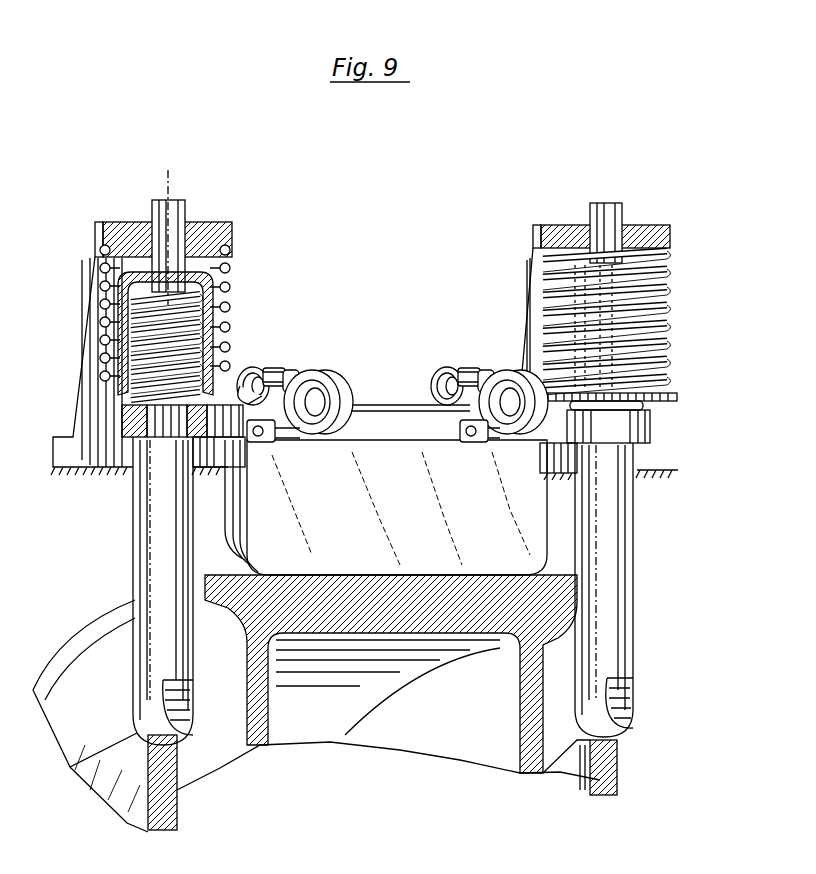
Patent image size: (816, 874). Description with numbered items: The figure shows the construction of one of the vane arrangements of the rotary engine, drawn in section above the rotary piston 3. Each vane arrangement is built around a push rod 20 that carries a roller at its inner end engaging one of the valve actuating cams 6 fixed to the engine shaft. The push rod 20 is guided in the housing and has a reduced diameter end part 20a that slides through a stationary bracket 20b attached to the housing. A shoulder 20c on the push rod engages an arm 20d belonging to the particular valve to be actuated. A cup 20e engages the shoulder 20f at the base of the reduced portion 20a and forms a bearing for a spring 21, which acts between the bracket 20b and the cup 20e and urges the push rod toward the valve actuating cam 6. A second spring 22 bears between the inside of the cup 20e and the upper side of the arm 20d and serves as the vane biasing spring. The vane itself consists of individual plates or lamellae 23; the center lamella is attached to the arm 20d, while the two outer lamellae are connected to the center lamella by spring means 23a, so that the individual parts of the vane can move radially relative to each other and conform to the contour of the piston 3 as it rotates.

The rotary piston 3 is at (345, 635).
The valve actuating cam 6 is at (172, 788).
The push rod 20 is at (153, 570).
The reduced diameter end part 20a is at (160, 212).
The stationary bracket 20b is at (105, 222).
The shoulder 20c is at (155, 437).
The arm 20d is at (228, 447).
The cup 20e is at (667, 303).
The shoulder 20f is at (205, 222).
The spring 21 is at (100, 340).
The spring 22 is at (120, 398).
The lamellae 23 is at (268, 537).
The spring means 23a is at (312, 360).